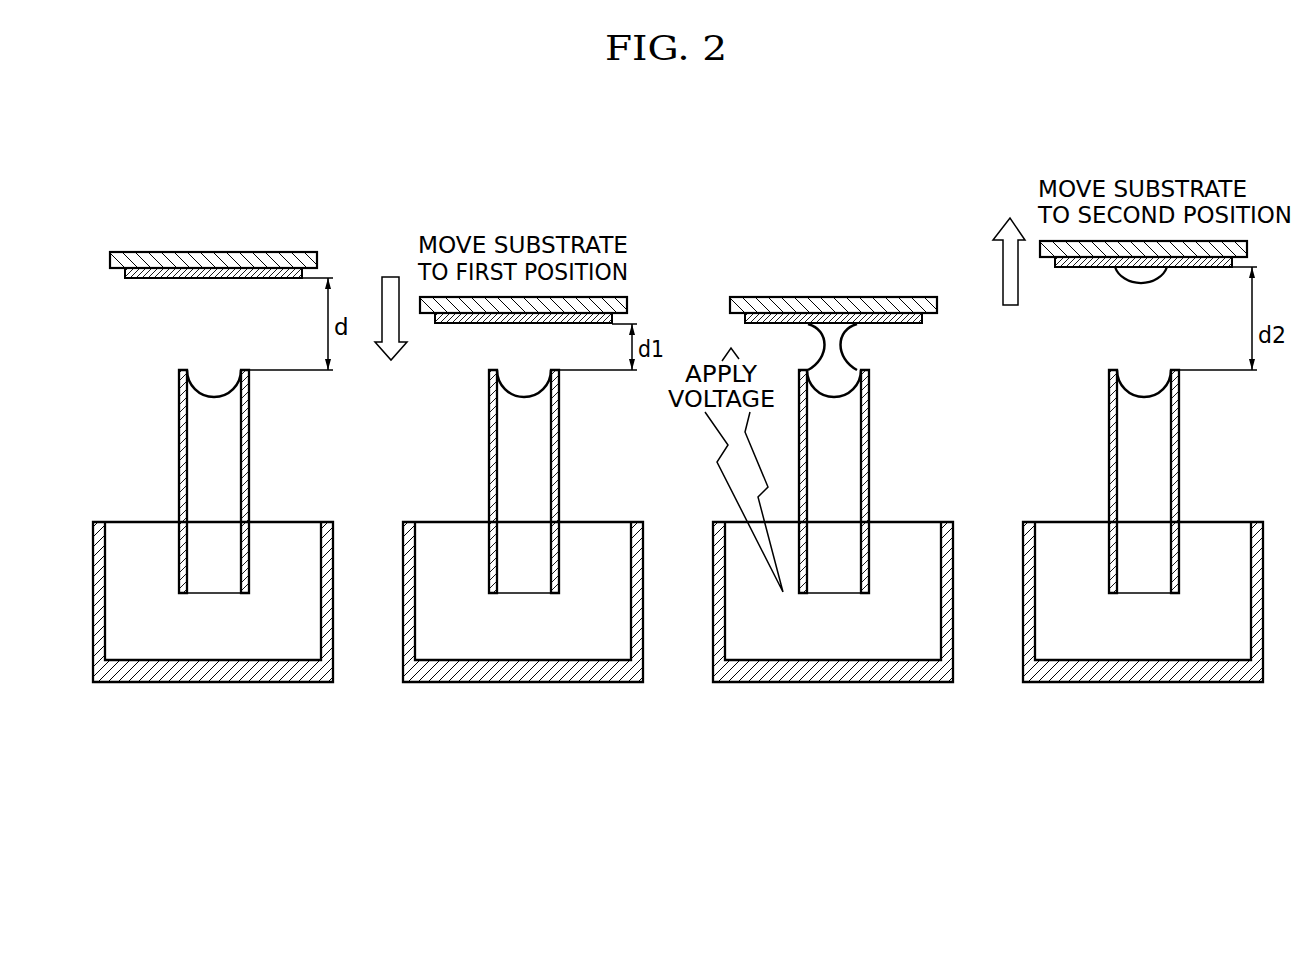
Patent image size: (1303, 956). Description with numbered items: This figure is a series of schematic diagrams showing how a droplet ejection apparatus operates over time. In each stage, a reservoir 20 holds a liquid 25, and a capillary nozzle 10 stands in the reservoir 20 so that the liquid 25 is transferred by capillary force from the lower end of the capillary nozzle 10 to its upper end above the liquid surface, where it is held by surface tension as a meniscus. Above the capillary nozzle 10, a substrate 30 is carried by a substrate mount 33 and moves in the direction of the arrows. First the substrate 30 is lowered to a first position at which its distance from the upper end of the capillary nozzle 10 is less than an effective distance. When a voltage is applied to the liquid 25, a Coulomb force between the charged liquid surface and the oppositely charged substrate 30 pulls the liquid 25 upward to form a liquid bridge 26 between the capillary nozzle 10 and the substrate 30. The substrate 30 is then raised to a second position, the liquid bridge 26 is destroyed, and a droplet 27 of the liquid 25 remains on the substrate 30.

The capillary nozzle 10 is at (177, 425).
The reservoir 20 is at (93, 557).
The liquid 25 is at (229, 637).
The liquid bridge 26 is at (849, 347).
The droplet 27 is at (1123, 291).
The substrate 30 is at (125, 273).
The substrate mount 33 is at (110, 259).